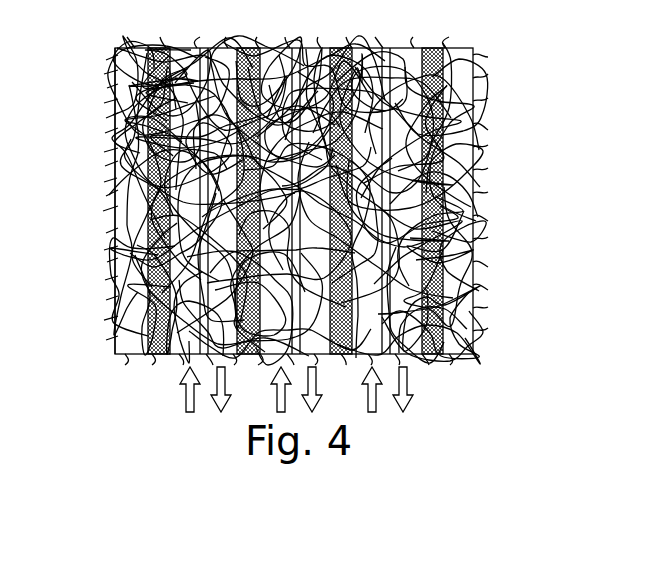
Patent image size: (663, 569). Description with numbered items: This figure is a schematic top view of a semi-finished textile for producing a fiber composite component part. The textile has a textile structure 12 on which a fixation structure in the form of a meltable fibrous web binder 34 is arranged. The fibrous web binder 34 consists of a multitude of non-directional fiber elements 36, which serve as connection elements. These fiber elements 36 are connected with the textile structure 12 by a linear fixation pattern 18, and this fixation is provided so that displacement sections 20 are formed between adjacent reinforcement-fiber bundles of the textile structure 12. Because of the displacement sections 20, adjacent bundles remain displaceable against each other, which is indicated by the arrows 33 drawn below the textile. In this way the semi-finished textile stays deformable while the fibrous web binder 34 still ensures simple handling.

The textile structure 12 is at (132, 357).
The fixation pattern 18 is at (173, 50).
The displacement sections 20 is at (198, 356).
The arrows 33 is at (185, 403).
The fibrous web binder 34 is at (96, 142).
The fiber elements 36 is at (110, 188).